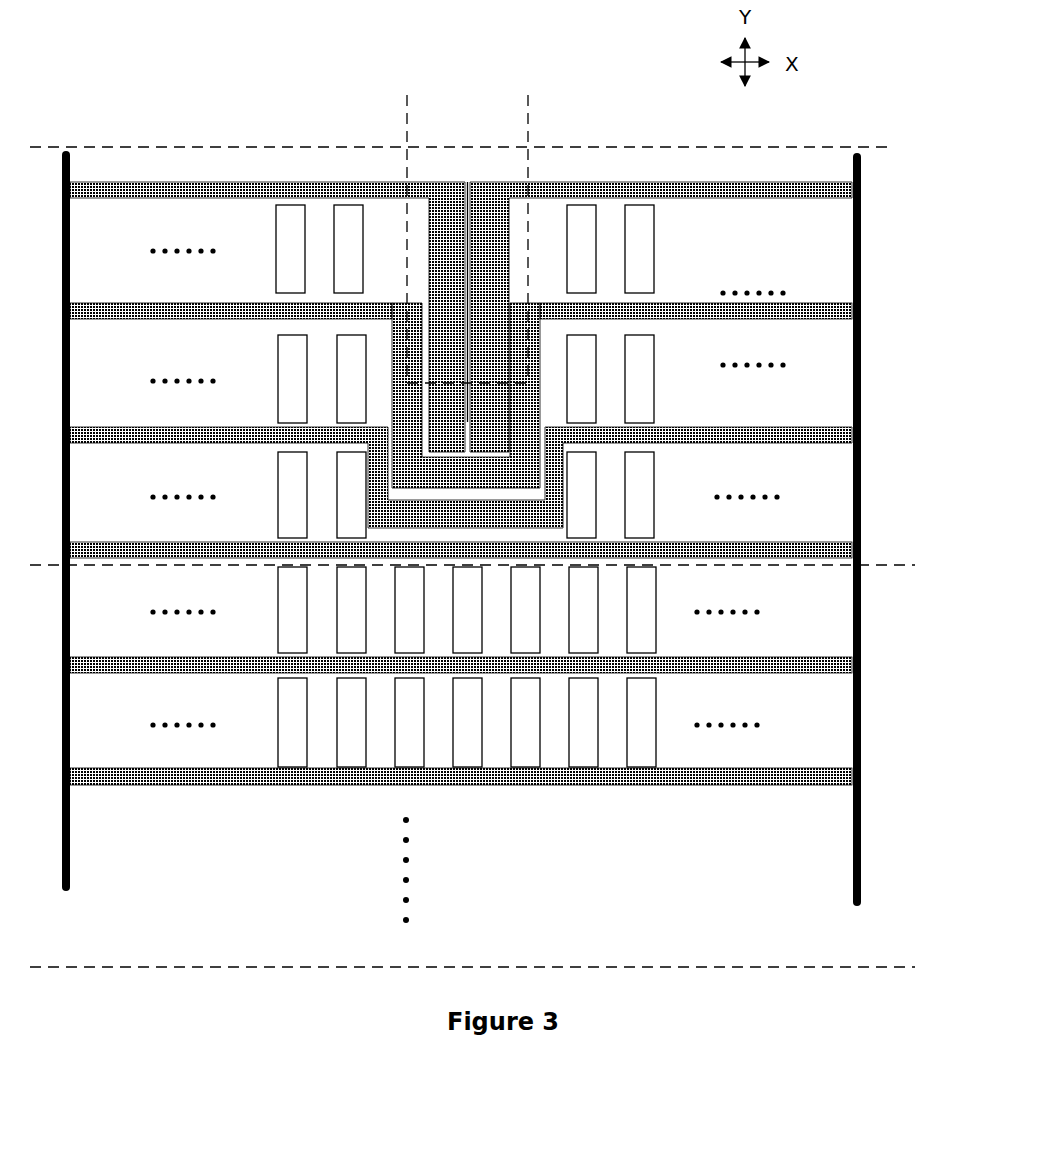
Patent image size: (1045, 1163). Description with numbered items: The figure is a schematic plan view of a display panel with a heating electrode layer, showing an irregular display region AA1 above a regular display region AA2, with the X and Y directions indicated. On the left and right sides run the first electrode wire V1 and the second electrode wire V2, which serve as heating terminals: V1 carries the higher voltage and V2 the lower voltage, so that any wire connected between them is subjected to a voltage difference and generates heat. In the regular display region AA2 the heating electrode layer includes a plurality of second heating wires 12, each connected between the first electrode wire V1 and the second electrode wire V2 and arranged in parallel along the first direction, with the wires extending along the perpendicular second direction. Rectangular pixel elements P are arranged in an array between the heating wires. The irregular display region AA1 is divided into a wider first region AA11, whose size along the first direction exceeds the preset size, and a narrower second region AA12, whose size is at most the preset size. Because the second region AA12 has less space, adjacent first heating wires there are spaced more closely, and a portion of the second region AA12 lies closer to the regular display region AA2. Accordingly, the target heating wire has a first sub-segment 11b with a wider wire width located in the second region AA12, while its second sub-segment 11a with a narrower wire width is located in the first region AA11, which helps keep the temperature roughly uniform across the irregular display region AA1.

The second sub-segment 11a is at (90, 302).
The first sub-segment 11b is at (515, 423).
The second heating wire 12 is at (735, 783).
The pixel element P is at (292, 627).
The first electrode wire V1 is at (59, 540).
The second electrode wire V2 is at (864, 551).
The irregular display region AA1 is at (878, 563).
The regular display region AA2 is at (898, 567).
The first region AA11 is at (407, 115).
The second region AA12 is at (526, 130).